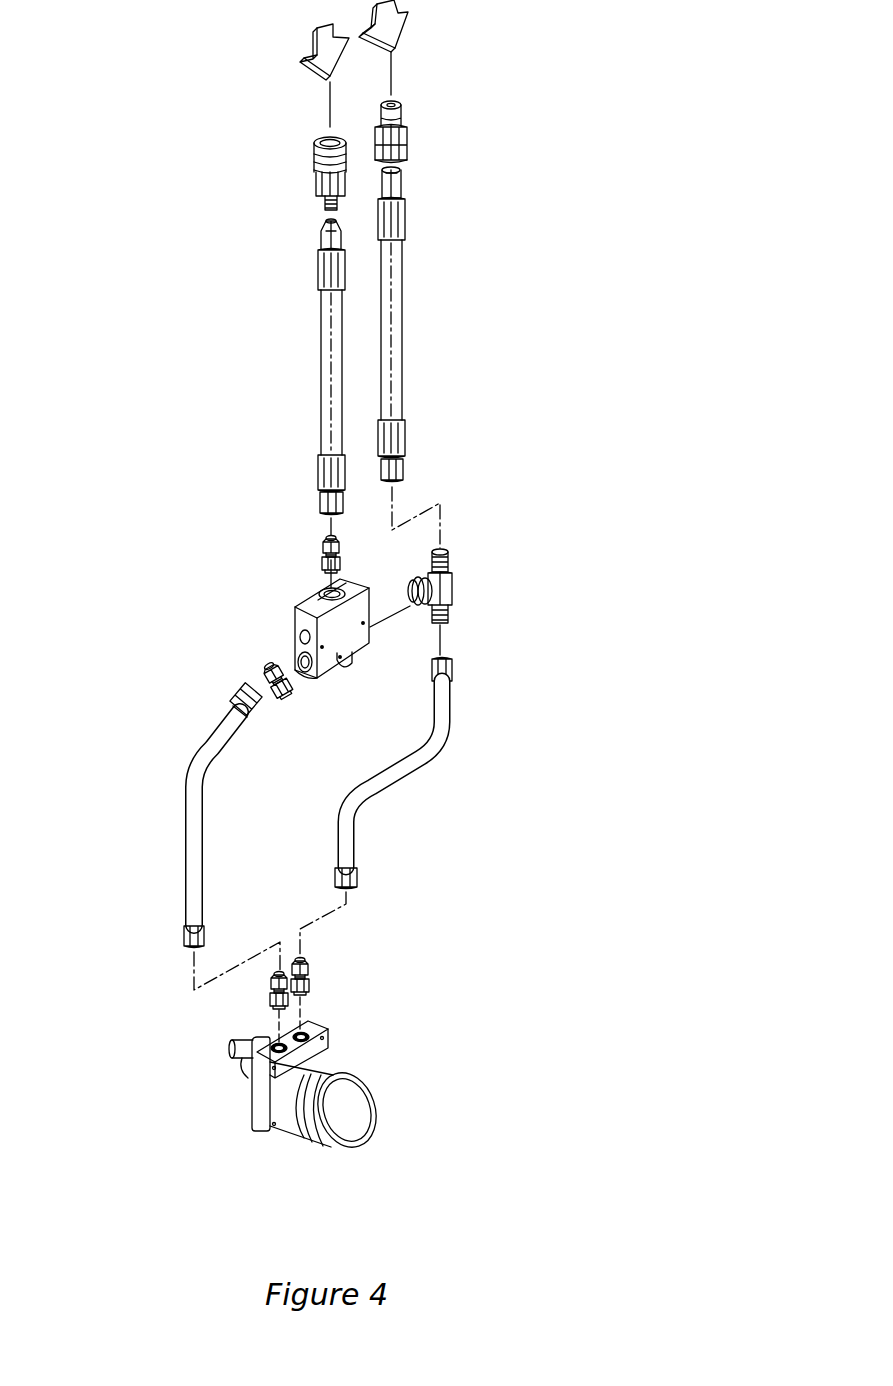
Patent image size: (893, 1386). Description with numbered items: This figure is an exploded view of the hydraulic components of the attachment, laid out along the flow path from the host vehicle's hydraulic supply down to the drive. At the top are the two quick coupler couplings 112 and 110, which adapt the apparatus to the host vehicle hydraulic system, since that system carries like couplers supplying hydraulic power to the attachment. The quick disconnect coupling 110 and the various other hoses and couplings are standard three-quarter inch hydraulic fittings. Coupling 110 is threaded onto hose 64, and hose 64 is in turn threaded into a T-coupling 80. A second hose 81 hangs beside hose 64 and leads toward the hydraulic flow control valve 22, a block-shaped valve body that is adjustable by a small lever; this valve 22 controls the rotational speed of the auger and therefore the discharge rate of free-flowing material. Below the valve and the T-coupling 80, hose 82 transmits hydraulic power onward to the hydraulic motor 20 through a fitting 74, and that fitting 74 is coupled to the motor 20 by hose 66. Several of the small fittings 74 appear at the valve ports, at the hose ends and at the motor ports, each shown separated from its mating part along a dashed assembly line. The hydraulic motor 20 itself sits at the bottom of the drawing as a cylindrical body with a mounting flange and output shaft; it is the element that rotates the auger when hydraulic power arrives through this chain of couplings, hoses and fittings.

The hydraulic motor 20 is at (260, 1126).
The hydraulic flow control valve 22 is at (292, 611).
The hose 64 is at (406, 294).
The hose 66 is at (185, 814).
The fitting 74 is at (318, 546).
The T-coupling 80 is at (458, 593).
The hydraulic hose 81 is at (318, 343).
The hose 82 is at (404, 768).
The quick disconnect coupling 110 is at (408, 139).
The quick coupler coupling 112 is at (316, 158).